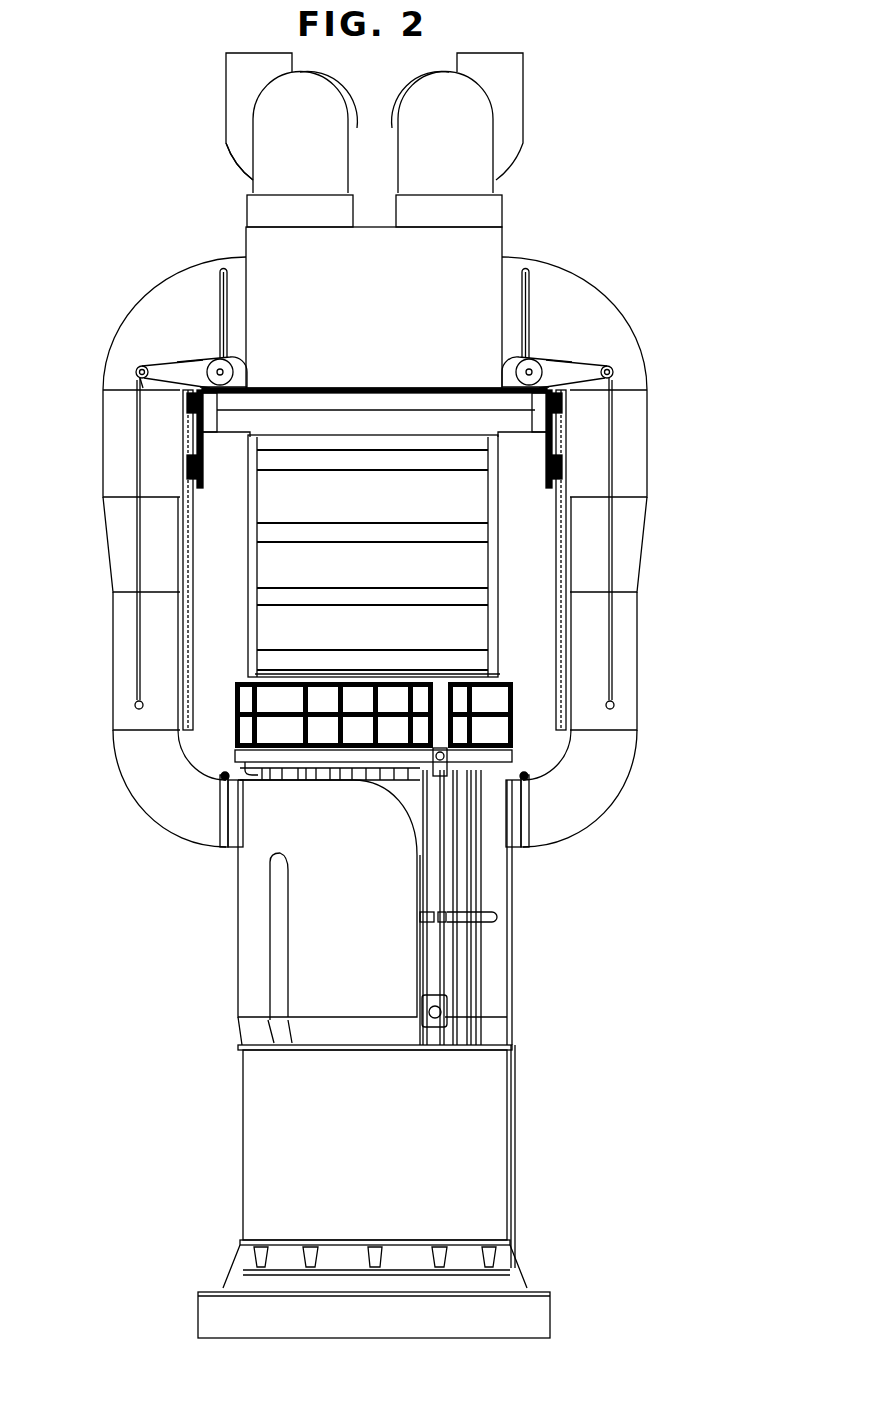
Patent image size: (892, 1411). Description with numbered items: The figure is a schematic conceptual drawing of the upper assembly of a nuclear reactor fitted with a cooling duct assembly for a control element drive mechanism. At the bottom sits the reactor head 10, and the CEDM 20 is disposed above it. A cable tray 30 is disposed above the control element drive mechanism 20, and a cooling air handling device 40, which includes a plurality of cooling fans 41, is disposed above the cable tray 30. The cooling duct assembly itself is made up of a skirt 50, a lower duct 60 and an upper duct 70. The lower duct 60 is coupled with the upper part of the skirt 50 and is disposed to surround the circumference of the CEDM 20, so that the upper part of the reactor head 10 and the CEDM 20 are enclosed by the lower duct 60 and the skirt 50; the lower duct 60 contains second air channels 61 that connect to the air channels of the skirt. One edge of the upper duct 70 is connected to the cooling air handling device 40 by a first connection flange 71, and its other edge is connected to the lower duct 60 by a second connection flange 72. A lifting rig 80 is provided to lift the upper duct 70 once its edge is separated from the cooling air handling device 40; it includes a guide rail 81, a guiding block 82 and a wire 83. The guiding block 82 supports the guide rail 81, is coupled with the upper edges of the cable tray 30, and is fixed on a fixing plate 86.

The reactor head 10 is at (235, 1283).
The control element drive mechanism (CEDM) 20 is at (410, 801).
The cable tray 30 is at (468, 566).
The cooling air handling device 40 is at (483, 248).
The cooling fan 41 is at (480, 130).
The skirt 50 is at (242, 1150).
The lower duct 60 is at (240, 983).
The second air channel 61 is at (492, 970).
The upper duct 70 is at (115, 548).
The first connection flange 71 is at (221, 268).
The second connection flange 72 is at (222, 830).
The lifting rig 80 is at (156, 352).
The guide rail 81 is at (565, 652).
The guiding block 82 is at (192, 403).
The wire 83 is at (138, 655).
The fixing plate 86 is at (200, 443).